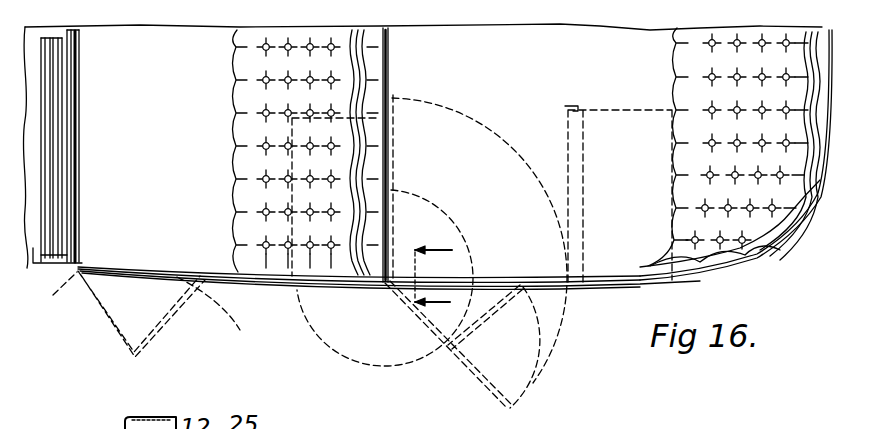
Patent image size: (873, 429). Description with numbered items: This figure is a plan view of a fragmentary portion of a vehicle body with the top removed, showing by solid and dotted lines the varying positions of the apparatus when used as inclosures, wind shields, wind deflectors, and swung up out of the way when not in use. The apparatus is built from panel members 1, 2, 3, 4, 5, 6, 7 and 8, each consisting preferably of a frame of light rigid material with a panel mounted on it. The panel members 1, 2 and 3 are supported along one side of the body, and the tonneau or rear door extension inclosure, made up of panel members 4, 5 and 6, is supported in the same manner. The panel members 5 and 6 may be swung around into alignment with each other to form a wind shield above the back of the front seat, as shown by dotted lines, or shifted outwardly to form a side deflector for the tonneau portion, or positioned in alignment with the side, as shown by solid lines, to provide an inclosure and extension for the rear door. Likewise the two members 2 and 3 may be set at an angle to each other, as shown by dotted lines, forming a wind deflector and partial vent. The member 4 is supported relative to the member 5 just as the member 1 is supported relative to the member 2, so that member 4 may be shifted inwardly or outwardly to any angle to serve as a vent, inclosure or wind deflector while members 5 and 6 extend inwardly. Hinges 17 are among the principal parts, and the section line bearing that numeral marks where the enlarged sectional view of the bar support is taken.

The panel member 1 is at (58, 276).
The panel member 2 is at (127, 279).
The panel member 3 is at (245, 281).
The panel member 4 is at (357, 283).
The panel member 5 is at (459, 281).
The panel member 6 is at (513, 281).
The panel member 7 is at (645, 278).
The panel member 8 is at (698, 274).
The hinges 17 is at (437, 278).